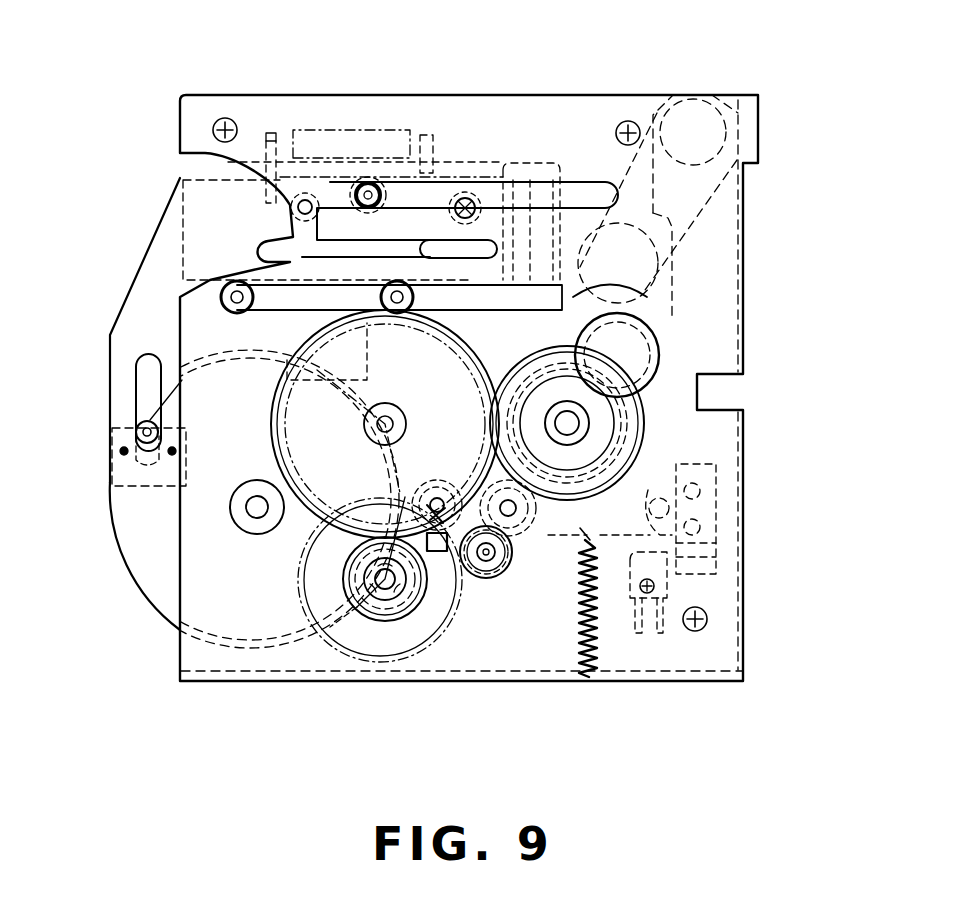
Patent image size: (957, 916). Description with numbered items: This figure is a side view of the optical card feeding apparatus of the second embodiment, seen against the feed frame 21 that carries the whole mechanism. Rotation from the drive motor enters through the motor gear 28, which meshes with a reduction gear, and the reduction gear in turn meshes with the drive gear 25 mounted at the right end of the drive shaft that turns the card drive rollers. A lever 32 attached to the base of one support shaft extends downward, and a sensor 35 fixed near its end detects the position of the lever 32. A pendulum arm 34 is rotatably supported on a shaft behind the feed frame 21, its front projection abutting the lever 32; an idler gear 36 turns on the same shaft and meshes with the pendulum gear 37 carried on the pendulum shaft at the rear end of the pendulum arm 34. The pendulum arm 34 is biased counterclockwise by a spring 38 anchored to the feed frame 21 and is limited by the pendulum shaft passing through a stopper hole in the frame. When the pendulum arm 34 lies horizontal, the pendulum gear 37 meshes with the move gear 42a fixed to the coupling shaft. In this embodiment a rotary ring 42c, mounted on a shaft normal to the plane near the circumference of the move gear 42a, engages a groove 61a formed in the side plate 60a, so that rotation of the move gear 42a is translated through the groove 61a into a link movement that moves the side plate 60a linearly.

The feed frame 21 is at (548, 117).
The drive gear 25 is at (657, 332).
The lever 32 is at (726, 357).
The pendulum arm 34 is at (724, 553).
The sensor 35 is at (668, 584).
The idler gear 36 is at (525, 530).
The pendulum gear 37 is at (462, 542).
The motor gear 28 is at (483, 545).
The spring 38 is at (600, 647).
The side plate 60a is at (161, 277).
The groove 61a is at (143, 366).
The rotary ring 42c is at (136, 426).
The move gear 42a is at (149, 585).